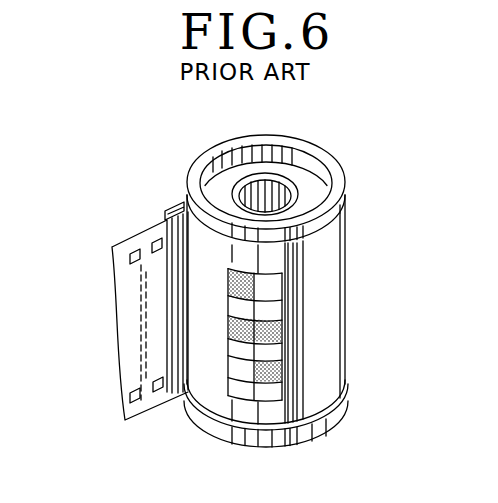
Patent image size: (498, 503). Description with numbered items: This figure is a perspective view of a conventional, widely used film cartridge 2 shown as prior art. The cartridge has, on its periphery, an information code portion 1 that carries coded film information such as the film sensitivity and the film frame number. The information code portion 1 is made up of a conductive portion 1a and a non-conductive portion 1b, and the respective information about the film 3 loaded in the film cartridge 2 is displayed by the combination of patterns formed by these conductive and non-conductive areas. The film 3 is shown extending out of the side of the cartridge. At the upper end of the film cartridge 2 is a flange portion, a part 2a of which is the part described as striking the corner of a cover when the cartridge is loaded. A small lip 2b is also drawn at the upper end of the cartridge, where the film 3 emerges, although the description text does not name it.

The information code portion 1 is at (288, 375).
The conductive portion 1a is at (277, 338).
The non-conductive portion 1b is at (275, 306).
The film cartridge 2 is at (273, 276).
The part of the flange portion 2a is at (338, 211).
The film exit slot lip 2b is at (174, 208).
The film 3 is at (122, 355).